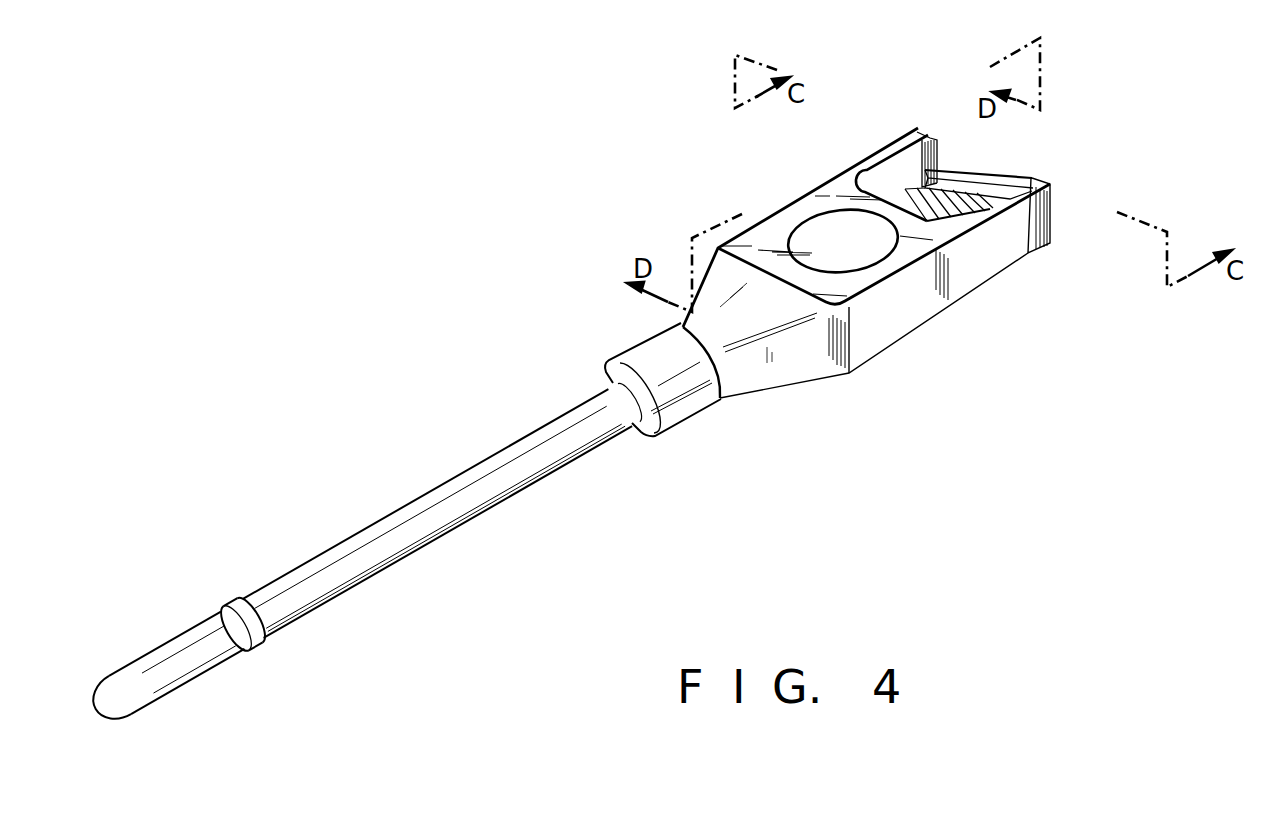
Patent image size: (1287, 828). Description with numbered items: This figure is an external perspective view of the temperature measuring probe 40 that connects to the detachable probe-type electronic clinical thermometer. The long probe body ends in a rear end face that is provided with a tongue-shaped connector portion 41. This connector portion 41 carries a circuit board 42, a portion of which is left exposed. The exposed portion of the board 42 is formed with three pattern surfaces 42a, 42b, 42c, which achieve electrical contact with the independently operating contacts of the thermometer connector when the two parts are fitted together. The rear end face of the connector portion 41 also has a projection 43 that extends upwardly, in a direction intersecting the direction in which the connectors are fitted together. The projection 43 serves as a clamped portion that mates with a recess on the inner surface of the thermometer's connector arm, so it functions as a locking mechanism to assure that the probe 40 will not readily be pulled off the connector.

The temperature measuring probe 40 is at (483, 205).
The tongue-shaped connector portion 41 is at (893, 172).
The circuit board 42 is at (946, 178).
The pattern surface 42a is at (980, 199).
The pattern surface 42b is at (940, 210).
The pattern surface 42c is at (913, 206).
The projection 43 is at (1007, 180).